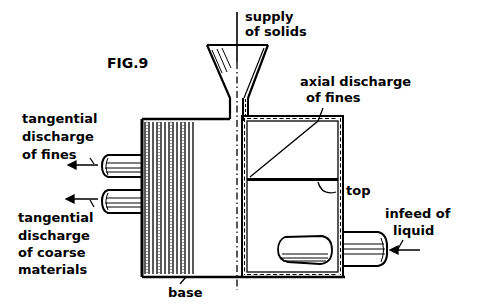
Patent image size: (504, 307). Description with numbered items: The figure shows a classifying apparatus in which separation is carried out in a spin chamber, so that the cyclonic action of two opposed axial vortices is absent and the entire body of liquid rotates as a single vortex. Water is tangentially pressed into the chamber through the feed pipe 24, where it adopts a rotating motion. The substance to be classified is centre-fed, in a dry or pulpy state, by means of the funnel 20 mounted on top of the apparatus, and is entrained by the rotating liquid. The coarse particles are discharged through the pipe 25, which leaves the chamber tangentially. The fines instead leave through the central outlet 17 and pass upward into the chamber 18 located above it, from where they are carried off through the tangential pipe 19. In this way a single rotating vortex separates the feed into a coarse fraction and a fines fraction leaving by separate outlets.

The central outlet 17 is at (250, 181).
The chamber 18 is at (341, 153).
The tangential pipe 19 is at (122, 155).
The funnel 20 is at (250, 110).
The feed pipe 24 is at (378, 231).
The pipe 25 is at (132, 214).